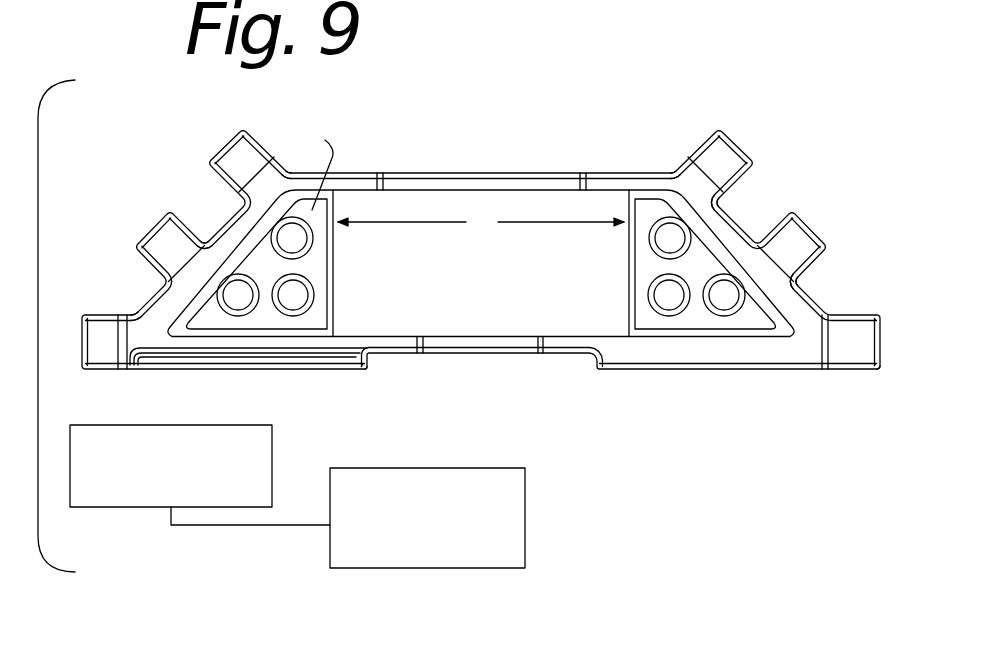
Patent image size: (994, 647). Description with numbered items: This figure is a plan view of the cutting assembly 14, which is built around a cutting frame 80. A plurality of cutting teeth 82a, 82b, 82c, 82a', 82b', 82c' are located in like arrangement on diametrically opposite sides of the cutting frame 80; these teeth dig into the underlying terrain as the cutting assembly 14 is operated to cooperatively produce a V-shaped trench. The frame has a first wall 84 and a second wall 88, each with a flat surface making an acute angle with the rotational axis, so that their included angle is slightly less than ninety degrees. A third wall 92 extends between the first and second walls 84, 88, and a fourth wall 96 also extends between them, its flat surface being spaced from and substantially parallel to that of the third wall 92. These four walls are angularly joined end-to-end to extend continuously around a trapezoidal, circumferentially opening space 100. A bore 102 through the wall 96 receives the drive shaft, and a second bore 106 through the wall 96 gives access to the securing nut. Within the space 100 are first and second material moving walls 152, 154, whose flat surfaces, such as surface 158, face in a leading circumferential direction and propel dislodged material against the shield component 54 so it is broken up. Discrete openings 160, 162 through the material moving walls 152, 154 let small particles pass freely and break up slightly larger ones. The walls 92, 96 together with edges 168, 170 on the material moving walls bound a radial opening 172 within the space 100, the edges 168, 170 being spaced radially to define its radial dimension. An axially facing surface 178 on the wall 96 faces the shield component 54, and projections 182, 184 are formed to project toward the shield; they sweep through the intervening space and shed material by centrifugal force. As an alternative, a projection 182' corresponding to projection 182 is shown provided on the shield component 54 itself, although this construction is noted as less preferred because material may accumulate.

The cutting assembly 14 is at (587, 163).
The shielding component 54 is at (441, 564).
The cutting frame 80 is at (523, 183).
The cutting tooth 82a is at (848, 311).
The cutting tooth 82b is at (795, 214).
The cutting tooth 82c is at (744, 146).
The cutting tooth 82a' is at (206, 309).
The cutting tooth 82b' is at (128, 231).
The cutting tooth 82c' is at (203, 165).
The first wall 84 is at (723, 232).
The second wall 88 is at (253, 235).
The third wall 92 is at (468, 182).
The fourth wall 96 is at (388, 343).
The trapezoidal space 100 is at (530, 312).
The bore 102 is at (422, 342).
The bore 106 is at (385, 180).
The first material moving wall 152 is at (330, 270).
The second material moving wall 154 is at (670, 272).
The flat surface 158 is at (648, 210).
The openings 160 is at (230, 287).
The openings 162 is at (672, 225).
The edge 168 is at (330, 307).
The edge 170 is at (630, 301).
The radial opening 172 is at (527, 260).
The axially facing surface 178 is at (572, 357).
The projection 182 is at (248, 396).
The projection 182' is at (171, 466).
The projection 184 is at (645, 370).